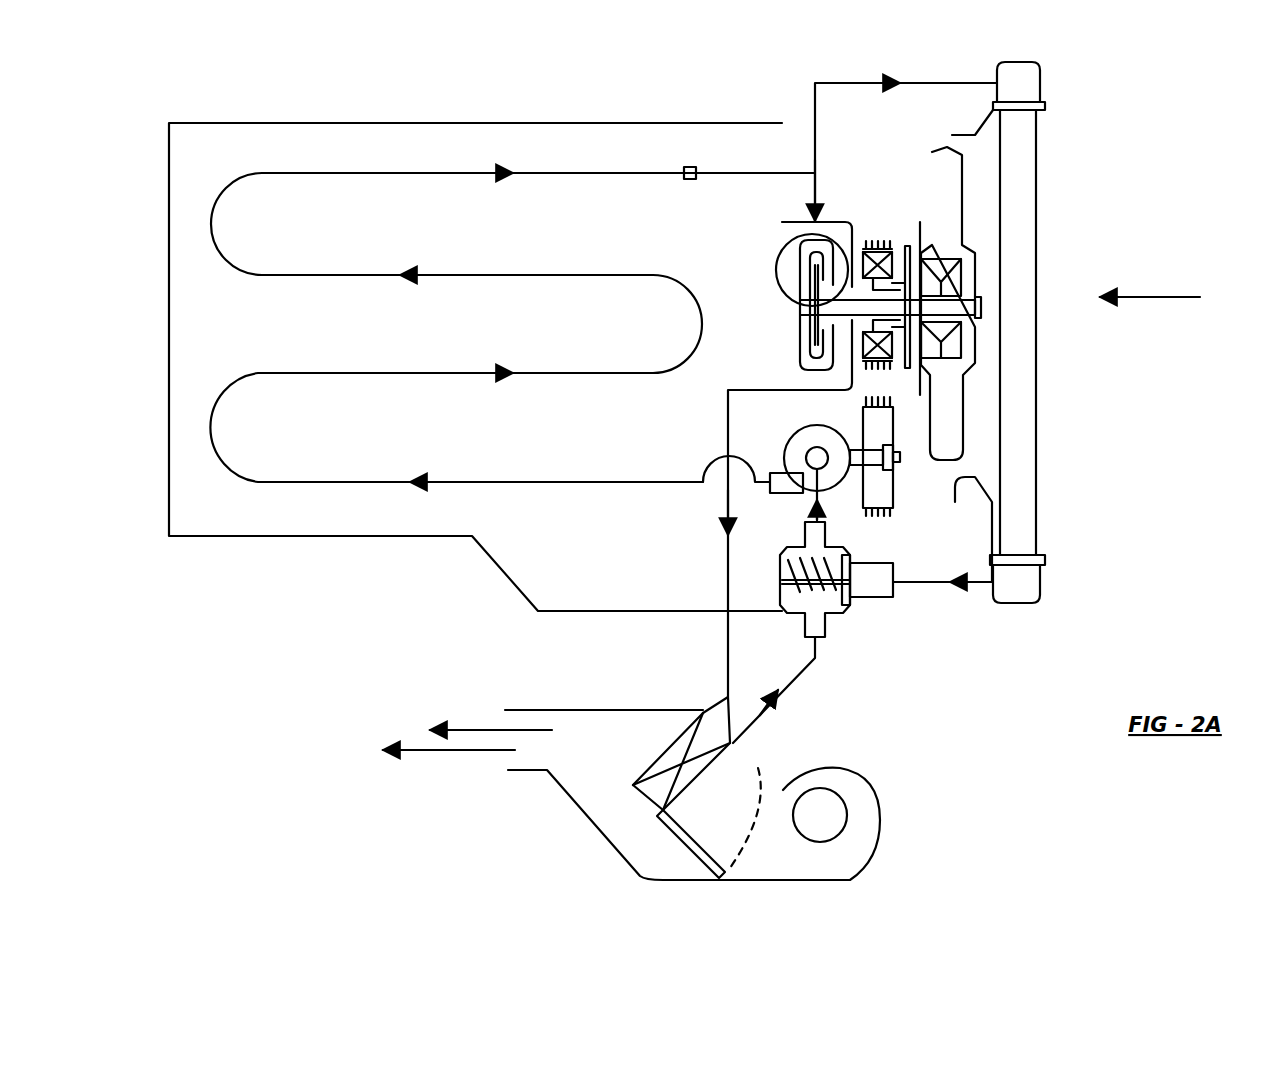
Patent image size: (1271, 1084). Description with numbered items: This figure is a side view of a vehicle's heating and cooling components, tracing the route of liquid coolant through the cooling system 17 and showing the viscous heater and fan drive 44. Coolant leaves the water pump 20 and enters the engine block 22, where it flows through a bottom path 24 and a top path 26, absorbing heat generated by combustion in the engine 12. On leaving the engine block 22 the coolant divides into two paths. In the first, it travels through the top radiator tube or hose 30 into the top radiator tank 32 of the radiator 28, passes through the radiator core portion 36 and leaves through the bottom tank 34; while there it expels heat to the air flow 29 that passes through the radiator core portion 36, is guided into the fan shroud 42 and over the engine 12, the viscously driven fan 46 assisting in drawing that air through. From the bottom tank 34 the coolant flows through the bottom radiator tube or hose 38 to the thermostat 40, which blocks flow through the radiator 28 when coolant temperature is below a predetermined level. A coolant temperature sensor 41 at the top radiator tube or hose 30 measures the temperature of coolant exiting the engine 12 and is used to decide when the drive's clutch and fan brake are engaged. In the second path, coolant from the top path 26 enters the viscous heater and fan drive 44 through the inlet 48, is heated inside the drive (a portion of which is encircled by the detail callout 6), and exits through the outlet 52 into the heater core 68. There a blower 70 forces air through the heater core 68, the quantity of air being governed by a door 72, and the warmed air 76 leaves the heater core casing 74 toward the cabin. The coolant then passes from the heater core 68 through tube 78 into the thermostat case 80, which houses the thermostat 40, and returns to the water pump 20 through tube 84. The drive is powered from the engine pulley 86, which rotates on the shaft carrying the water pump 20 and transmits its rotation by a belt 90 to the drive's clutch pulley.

The engine 12 is at (188, 620).
The cooling system 17 is at (738, 92).
The water pump 20 is at (800, 426).
The engine block 22 is at (412, 538).
The bottom path 24 is at (222, 385).
The top path 26 is at (220, 200).
The radiator 28 is at (1036, 242).
The air flow 29 is at (1160, 297).
The top radiator tube or hose 30 is at (848, 83).
The top radiator tank 32 is at (1045, 75).
The bottom radiator tank 34 is at (1040, 595).
The radiator core portion 36 is at (1036, 332).
The bottom radiator tube or hose 38 is at (982, 583).
The thermostat 40 is at (848, 590).
The coolant temperature sensor 41 is at (683, 167).
The fan shroud 42 is at (968, 529).
The viscous heater and fan drive 44 is at (782, 357).
The viscously driven fan 46 is at (965, 177).
The viscous heater and fan drive inlet tube 48 is at (815, 195).
The viscous heater and fan drive outlet 52 is at (753, 388).
The section view indicator 6 is at (790, 230).
The heater core 68 is at (663, 748).
The blower 70 is at (873, 795).
The door 72 is at (660, 880).
The heater core casing 74 is at (583, 812).
The warmed air 76 is at (447, 750).
The tube 78 is at (795, 678).
The thermostat case 80 is at (827, 617).
The tube 84 is at (800, 518).
The engine pulley 86 is at (895, 487).
The belt 90 is at (893, 393).